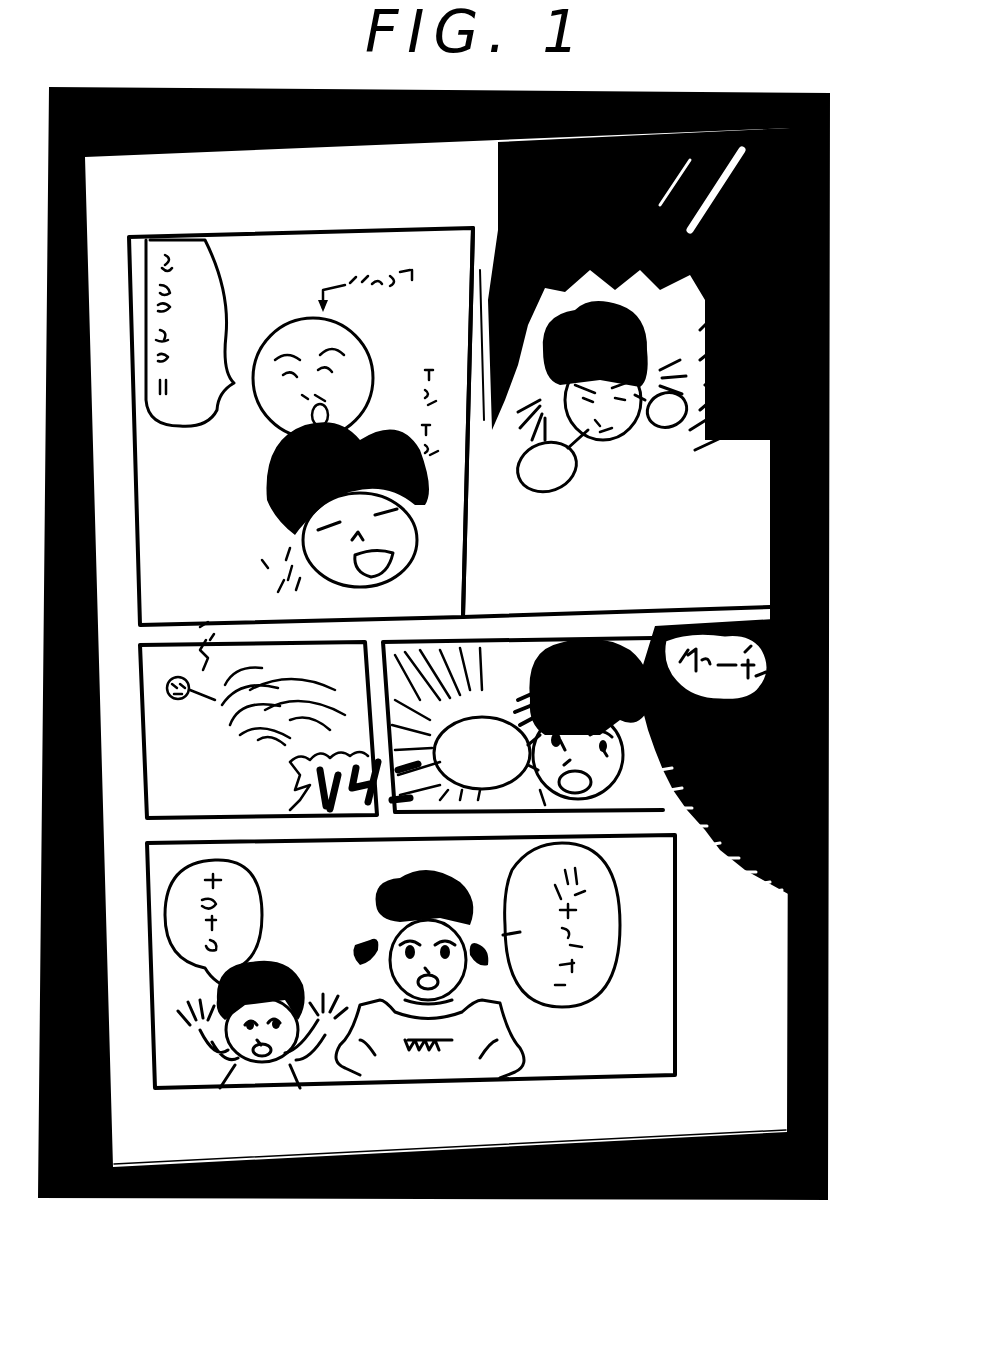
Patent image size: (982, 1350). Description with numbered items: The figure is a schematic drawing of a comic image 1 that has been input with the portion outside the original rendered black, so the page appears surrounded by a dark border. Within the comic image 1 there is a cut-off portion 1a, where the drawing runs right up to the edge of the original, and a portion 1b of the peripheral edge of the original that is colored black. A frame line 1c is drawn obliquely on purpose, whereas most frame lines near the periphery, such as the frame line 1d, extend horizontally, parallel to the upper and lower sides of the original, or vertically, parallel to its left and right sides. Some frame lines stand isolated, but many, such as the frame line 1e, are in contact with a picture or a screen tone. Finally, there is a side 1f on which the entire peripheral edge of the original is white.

The comic image 1 is at (858, 490).
The cut-off portion 1a is at (768, 225).
The portion of the peripheral edge colored black 1b is at (755, 731).
The frame line 1c is at (470, 558).
The frame line 1d is at (684, 1016).
The frame line 1e is at (302, 787).
The side 1f is at (220, 1156).